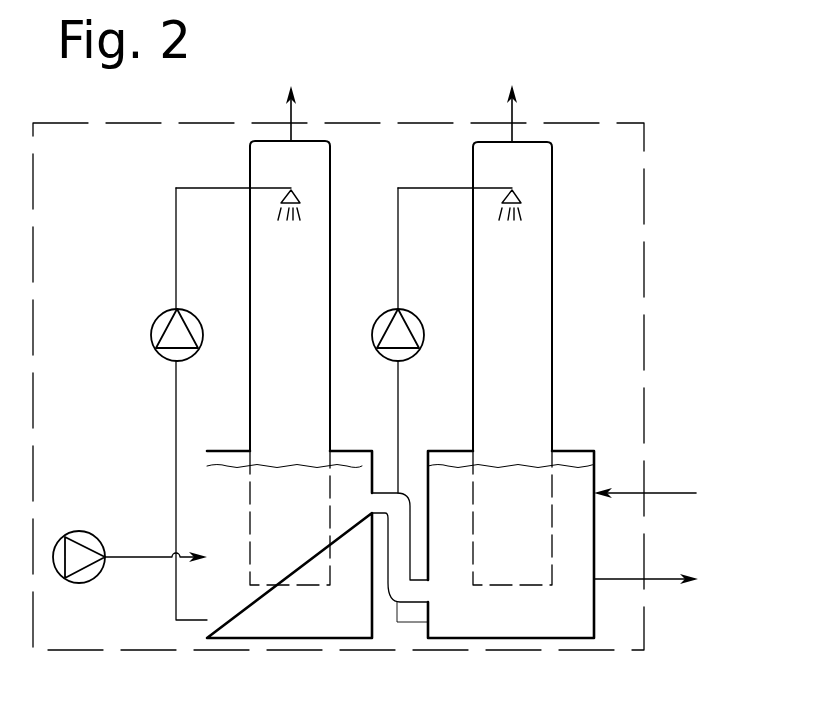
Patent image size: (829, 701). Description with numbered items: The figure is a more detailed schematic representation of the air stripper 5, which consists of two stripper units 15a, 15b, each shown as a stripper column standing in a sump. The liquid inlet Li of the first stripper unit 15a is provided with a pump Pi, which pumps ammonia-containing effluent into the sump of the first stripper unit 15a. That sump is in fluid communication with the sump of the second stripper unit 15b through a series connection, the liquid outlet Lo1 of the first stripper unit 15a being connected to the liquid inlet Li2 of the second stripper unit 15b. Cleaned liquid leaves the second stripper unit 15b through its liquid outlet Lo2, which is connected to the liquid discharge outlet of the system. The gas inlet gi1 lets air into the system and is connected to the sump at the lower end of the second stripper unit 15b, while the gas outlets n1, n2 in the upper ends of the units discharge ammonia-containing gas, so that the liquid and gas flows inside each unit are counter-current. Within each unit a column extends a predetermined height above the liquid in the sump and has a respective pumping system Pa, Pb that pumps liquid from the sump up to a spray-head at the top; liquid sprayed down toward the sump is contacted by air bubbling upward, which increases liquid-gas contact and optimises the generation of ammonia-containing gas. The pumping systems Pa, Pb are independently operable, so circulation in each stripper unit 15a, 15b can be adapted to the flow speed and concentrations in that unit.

The air stripper 5 is at (644, 133).
The first stripper unit 15a is at (290, 425).
The second stripper unit 15b is at (525, 408).
The gas outlet n1 is at (514, 110).
The gas outlet n2 is at (292, 110).
The pumping system Pa is at (160, 325).
The pumping system Pb is at (384, 322).
The pump Pi is at (85, 535).
The liquid inlet Li is at (138, 557).
The liquid outlet Lo1 is at (380, 498).
The liquid inlet Li2 is at (422, 592).
The liquid outlet Lo2 is at (663, 572).
The gas inlet gi1 is at (668, 492).